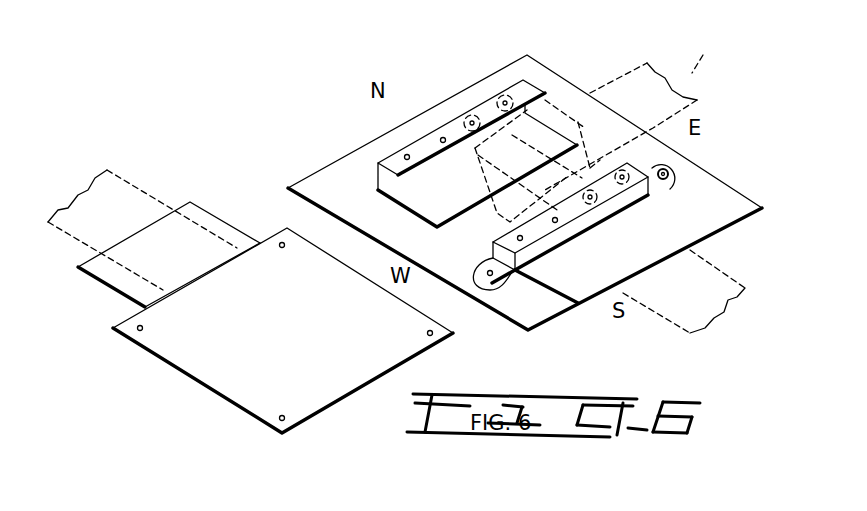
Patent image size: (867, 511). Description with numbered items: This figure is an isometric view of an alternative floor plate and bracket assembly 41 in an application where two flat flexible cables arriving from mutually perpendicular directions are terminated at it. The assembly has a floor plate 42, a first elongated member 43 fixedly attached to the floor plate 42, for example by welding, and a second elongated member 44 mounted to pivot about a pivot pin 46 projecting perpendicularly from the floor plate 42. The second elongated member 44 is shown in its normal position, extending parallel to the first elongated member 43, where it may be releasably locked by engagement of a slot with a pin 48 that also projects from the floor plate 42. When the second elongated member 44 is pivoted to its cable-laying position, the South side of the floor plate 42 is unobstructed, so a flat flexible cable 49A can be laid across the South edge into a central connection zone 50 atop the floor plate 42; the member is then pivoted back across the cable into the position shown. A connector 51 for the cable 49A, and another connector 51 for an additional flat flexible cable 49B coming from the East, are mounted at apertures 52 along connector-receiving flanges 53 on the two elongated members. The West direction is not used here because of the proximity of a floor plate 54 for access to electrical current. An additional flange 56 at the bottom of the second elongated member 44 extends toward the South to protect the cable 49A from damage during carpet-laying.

The floor plate and bracket assembly 41 is at (760, 249).
The floor plate 42 is at (692, 168).
The first elongated member 43 is at (384, 206).
The second elongated member 44 is at (518, 290).
The pivot pin 46 is at (490, 271).
The pin 48 is at (676, 181).
The flat flexible cable 49A is at (684, 306).
The flat flexible cable 49B is at (625, 110).
The central connection zone 50 is at (562, 94).
The connector 51 is at (596, 142).
The apertures 52 is at (443, 138).
The connector-receiving flanges 53 is at (485, 107).
The floor plate 54 is at (226, 377).
The additional flange 56 is at (582, 295).